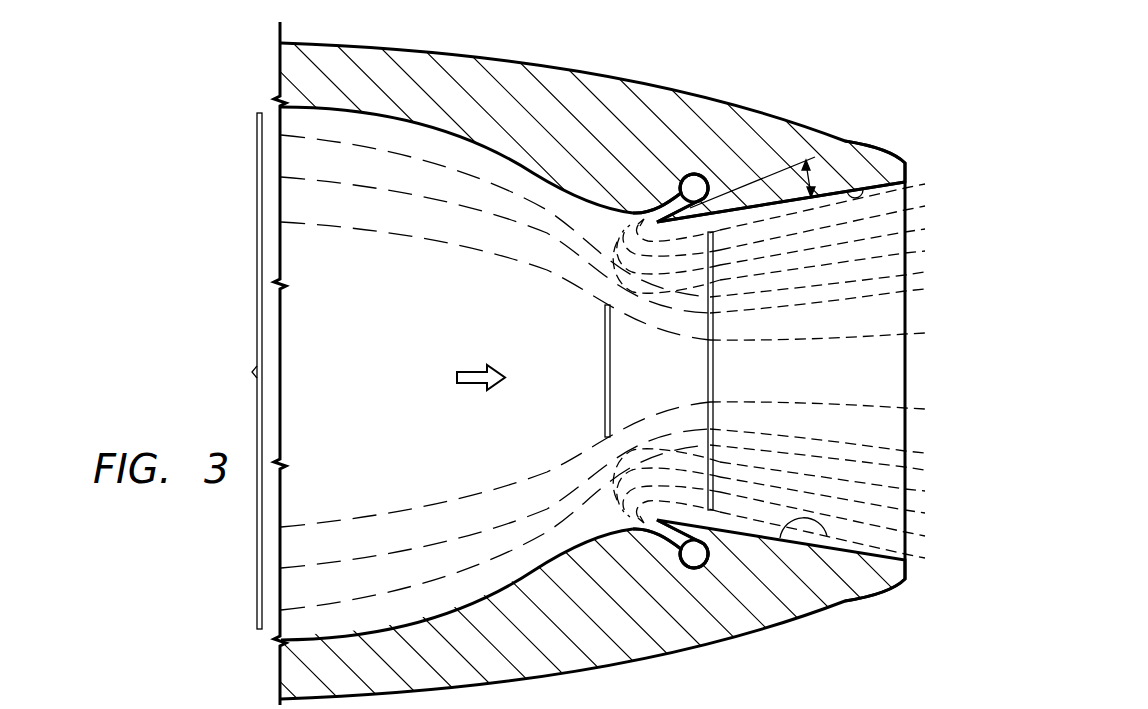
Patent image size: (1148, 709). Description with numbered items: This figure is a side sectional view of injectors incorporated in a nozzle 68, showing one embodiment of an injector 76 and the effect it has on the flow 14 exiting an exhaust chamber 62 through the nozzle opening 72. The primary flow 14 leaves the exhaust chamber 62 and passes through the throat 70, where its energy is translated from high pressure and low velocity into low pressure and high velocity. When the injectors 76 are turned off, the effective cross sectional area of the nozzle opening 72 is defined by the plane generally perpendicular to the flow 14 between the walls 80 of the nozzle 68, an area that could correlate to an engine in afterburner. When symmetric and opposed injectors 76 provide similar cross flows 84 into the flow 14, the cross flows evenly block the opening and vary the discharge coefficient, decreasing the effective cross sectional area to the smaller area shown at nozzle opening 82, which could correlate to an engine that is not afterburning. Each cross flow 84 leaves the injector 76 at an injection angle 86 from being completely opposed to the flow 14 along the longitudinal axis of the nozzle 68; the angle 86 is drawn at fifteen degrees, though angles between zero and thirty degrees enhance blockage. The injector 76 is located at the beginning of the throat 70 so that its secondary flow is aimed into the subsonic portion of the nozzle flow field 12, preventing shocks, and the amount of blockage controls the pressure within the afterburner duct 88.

The nozzle flow field 12 is at (253, 372).
The flow 14 is at (468, 372).
The exhaust chamber 62 is at (391, 386).
The nozzle 68 is at (905, 131).
The throat 70 is at (629, 196).
The nozzle opening 72 is at (713, 362).
The injector 76 is at (701, 176).
The walls 80 is at (862, 187).
The nozzle opening 82 is at (610, 362).
The cross flow 84 is at (660, 204).
The injection angle 86 is at (810, 179).
The afterburner duct 88 is at (635, 533).